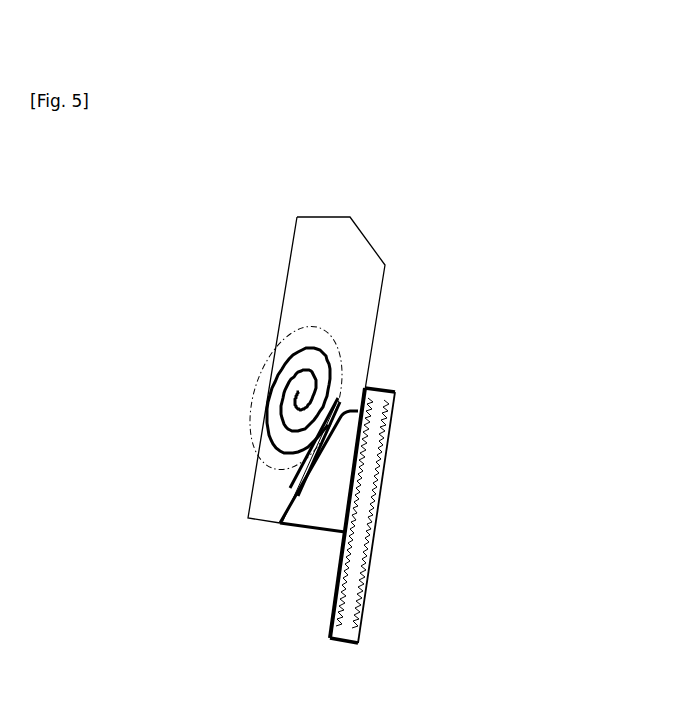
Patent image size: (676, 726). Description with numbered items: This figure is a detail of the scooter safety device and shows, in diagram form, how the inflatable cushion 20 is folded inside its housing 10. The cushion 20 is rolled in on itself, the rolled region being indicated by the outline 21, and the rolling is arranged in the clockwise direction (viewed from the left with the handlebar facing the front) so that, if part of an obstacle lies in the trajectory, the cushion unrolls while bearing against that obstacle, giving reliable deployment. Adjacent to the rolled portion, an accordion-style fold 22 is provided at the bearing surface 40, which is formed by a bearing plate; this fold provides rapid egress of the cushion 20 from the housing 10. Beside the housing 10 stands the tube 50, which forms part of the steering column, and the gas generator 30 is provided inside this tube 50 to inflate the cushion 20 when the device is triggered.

The housing 10 is at (248, 520).
The inflatable cushion 20 is at (327, 338).
The coil region 21 is at (258, 395).
The accordion-style fold 22 is at (338, 392).
The gas generator 30 is at (381, 495).
The bearing surface 40 is at (282, 523).
The tube 50 is at (392, 415).